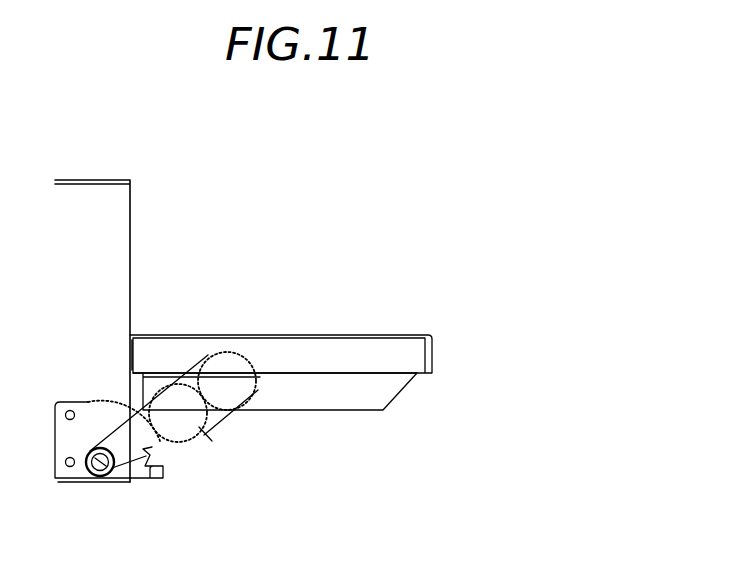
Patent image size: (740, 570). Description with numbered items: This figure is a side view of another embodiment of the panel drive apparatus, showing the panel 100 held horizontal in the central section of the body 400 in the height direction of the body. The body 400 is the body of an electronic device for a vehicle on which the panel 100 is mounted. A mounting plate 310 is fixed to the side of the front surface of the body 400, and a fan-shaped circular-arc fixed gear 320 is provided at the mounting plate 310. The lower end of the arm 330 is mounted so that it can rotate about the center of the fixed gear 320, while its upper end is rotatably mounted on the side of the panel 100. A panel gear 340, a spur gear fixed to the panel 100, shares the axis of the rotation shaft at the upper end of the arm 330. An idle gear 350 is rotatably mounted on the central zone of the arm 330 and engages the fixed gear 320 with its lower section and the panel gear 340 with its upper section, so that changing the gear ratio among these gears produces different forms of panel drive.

The panel 100 is at (198, 335).
The mounting plate 310 is at (88, 428).
The fixed gear 320 is at (128, 410).
The arm 330 is at (147, 449).
The panel gear 340 is at (228, 395).
The idle gear 350 is at (200, 428).
The body 400 is at (94, 182).